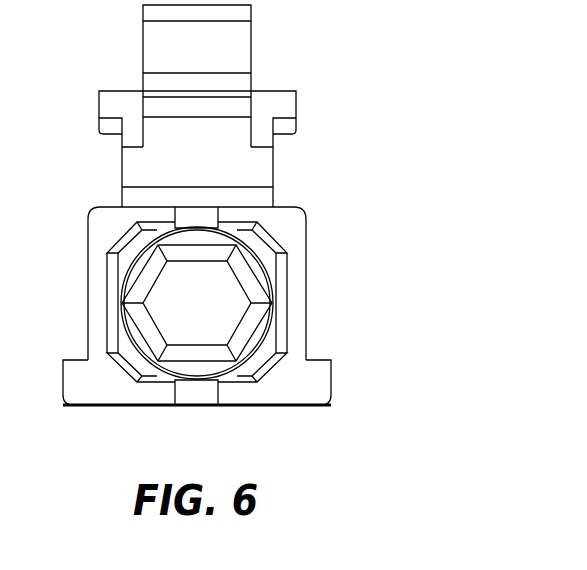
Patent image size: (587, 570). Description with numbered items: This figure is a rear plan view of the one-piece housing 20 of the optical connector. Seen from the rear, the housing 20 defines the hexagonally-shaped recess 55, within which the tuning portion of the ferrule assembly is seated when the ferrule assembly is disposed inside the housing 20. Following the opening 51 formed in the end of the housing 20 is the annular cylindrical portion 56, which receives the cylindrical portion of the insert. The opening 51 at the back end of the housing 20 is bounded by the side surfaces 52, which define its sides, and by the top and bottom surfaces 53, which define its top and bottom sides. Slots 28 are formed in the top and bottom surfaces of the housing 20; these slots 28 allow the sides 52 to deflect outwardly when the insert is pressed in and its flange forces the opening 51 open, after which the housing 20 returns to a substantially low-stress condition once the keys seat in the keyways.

The one-piece housing 20 is at (388, 151).
The slots 28 is at (201, 220).
The opening 51 is at (172, 297).
The side surfaces 52 is at (92, 377).
The top and bottom surfaces 53 is at (150, 236).
The hexagonally-shaped recess 55 is at (245, 283).
The annular cylindrical portion 56 is at (268, 392).